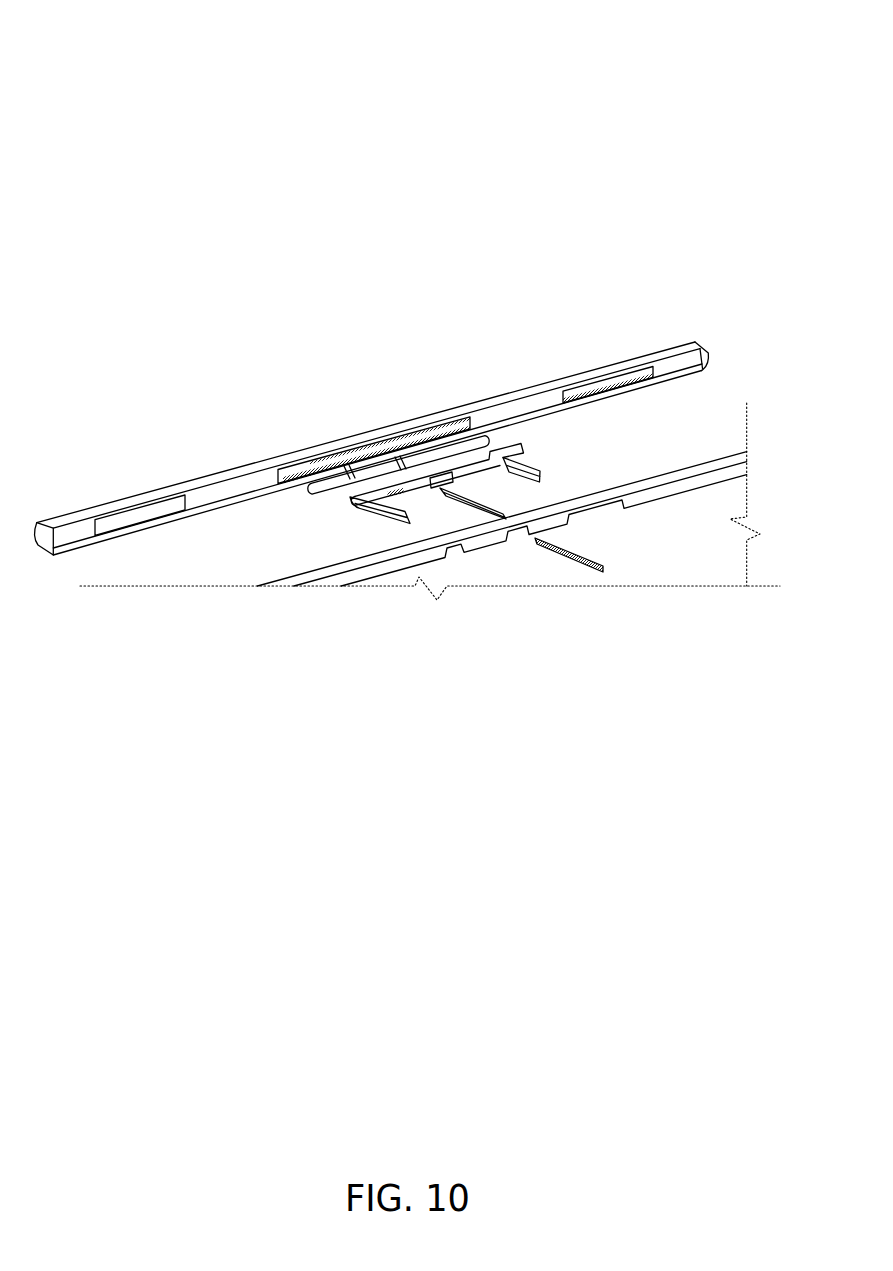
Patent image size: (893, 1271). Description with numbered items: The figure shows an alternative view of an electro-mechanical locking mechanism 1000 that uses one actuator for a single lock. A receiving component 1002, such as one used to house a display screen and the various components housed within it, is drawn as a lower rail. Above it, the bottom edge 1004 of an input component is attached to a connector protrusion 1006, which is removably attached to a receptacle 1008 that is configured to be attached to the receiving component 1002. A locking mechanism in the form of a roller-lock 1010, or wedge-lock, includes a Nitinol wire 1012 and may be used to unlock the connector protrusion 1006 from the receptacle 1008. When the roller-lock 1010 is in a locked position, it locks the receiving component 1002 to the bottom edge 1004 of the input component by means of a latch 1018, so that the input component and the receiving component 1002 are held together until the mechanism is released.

The electro-mechanical locking mechanism 1000 is at (146, 95).
The receiving component 1002 is at (657, 568).
The bottom edge 1004 is at (237, 467).
The connector protrusion 1006 is at (443, 455).
The receptacle 1008 is at (375, 512).
The roller-lock 1010 is at (547, 577).
The Nitinol wire 1012 is at (578, 563).
The latch 1018 is at (489, 486).